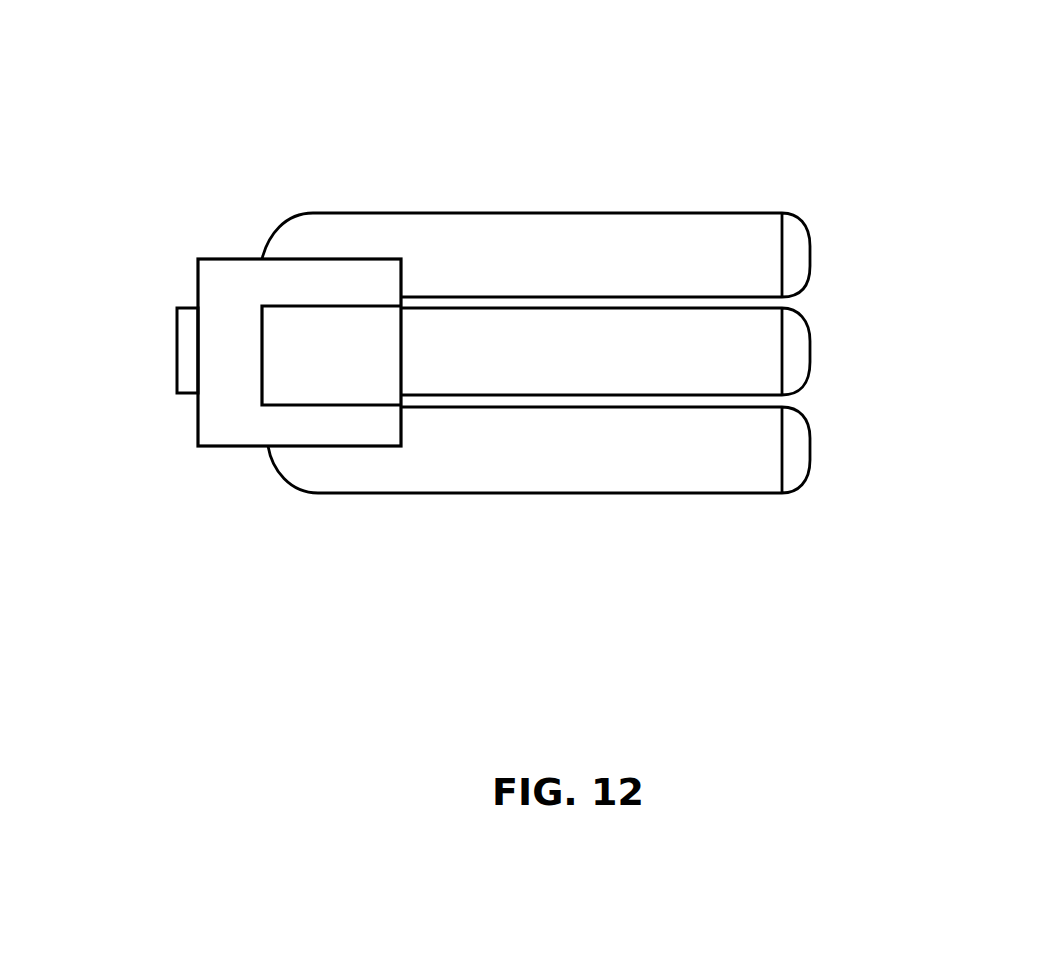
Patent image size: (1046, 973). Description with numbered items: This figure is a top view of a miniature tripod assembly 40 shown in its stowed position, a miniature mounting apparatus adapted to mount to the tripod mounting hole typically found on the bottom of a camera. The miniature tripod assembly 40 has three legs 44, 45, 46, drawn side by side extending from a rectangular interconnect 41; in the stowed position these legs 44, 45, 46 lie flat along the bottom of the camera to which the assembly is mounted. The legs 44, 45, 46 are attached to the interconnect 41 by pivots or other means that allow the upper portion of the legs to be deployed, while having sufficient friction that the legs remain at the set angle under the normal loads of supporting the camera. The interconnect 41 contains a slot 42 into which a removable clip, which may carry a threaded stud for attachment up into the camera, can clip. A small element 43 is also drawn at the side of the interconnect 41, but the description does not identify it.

The miniature tripod assembly 40 is at (198, 88).
The interconnect 41 is at (243, 259).
The slot 42 is at (401, 310).
The connector tab 43 is at (178, 362).
The leg 44 is at (730, 213).
The leg 45 is at (810, 355).
The leg 46 is at (616, 493).